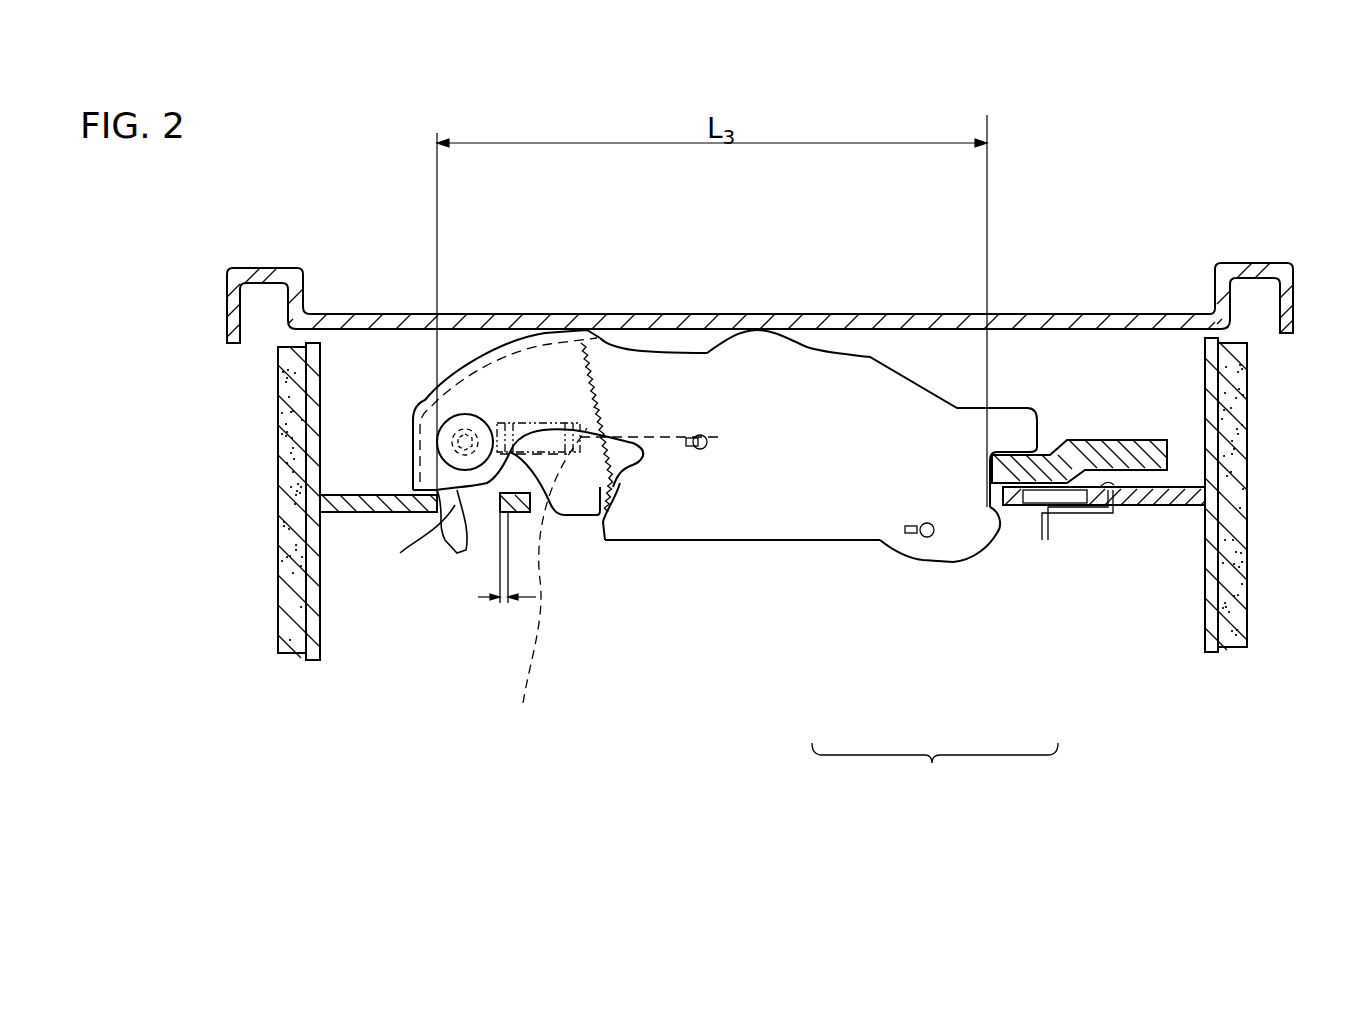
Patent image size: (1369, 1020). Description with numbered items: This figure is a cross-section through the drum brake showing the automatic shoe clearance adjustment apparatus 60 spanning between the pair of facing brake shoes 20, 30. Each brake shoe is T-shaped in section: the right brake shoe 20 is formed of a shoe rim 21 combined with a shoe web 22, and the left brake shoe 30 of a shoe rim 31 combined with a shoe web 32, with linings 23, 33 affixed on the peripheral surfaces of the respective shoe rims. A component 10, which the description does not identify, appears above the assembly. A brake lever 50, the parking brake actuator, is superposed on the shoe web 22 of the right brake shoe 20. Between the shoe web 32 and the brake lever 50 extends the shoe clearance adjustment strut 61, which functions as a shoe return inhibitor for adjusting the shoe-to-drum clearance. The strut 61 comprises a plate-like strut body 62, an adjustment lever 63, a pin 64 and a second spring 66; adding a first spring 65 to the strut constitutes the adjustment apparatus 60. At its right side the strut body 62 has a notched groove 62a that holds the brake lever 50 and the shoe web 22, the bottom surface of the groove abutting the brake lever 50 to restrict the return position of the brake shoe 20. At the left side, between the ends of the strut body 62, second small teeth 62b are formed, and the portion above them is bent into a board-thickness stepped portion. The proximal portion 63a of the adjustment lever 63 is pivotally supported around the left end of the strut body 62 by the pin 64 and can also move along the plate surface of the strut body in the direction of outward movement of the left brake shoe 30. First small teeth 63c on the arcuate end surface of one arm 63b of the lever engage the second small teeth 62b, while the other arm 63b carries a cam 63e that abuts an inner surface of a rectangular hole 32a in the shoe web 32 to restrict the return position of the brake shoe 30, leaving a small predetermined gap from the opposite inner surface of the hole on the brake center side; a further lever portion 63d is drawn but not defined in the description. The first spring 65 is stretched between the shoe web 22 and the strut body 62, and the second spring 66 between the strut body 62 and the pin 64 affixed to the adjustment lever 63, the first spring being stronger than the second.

The lamp unit 10 is at (919, 308).
The brake shoe 20 is at (1258, 523).
The shoe rim 21 is at (1212, 654).
The shoe web 22 is at (1153, 506).
The lining 23 is at (1240, 650).
The brake shoe 30 is at (270, 569).
The shoe rim 31 is at (318, 660).
The shoe web 32 is at (378, 494).
The rectangular hole 32a is at (490, 513).
The lining 33 is at (288, 656).
The brake lever 50 is at (1122, 440).
The automatic shoe clearance adjustment apparatus 60 is at (935, 774).
The shoe clearance adjustment strut 61 is at (790, 550).
The strut body 62 is at (738, 545).
The notched groove 62a is at (1008, 513).
The second small teeth 62b is at (605, 520).
The adjustment lever 63 is at (567, 510).
The proximal portion 63a is at (427, 398).
The arm 63b is at (583, 340).
The first small teeth 63c is at (623, 483).
The lever hook 63d is at (460, 555).
The cam 63e is at (412, 549).
The pin 64 is at (468, 540).
The first spring 65 is at (1044, 542).
The second spring 66 is at (548, 590).